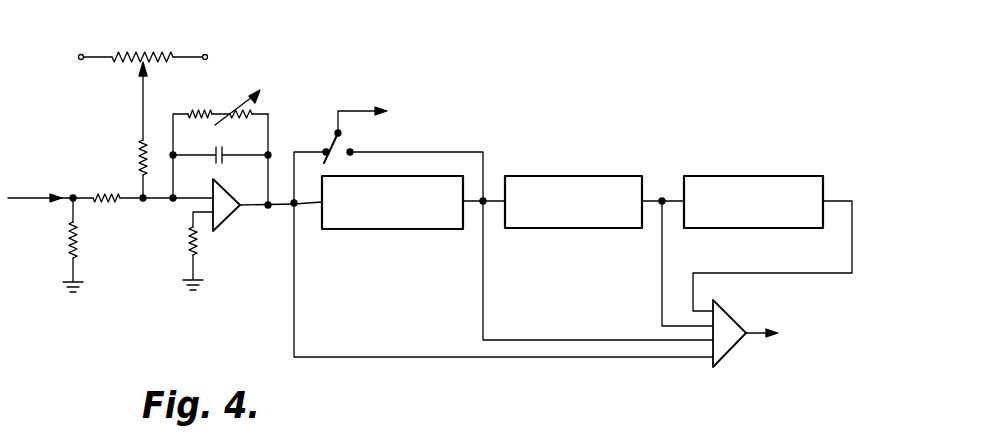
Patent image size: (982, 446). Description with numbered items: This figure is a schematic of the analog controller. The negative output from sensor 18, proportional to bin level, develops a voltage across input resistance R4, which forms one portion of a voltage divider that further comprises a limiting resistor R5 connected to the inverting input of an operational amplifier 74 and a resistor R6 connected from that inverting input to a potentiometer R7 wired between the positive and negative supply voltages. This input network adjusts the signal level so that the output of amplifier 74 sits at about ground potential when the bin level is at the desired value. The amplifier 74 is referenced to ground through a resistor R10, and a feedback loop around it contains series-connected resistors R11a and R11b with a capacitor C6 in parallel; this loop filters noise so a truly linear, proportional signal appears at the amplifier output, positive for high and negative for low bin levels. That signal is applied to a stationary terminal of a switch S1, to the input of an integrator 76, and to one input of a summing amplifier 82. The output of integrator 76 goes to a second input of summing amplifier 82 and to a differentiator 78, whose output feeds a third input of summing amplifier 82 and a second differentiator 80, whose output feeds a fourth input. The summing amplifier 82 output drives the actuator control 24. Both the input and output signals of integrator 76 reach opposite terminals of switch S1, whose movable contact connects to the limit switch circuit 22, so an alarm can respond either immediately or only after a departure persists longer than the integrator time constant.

The sensor 18 is at (41, 174).
The limit switch circuit 22 is at (449, 118).
The actuator control 24 is at (810, 333).
The operational amplifier 74 is at (227, 218).
The integrator 76 is at (442, 176).
The differentiator 78 is at (628, 176).
The second differentiator 80 is at (802, 176).
The summing amplifier 82 is at (730, 314).
The input resistance R4 is at (56, 245).
The limiting resistor R5 is at (143, 185).
The resistor R6 is at (155, 169).
The potentiometer R7 is at (140, 81).
The resistor R10 is at (181, 251).
The feedback resistor R11a is at (202, 101).
The feedback resistor R11b is at (247, 99).
The capacitor C6 is at (220, 147).
The switch S1 is at (352, 146).